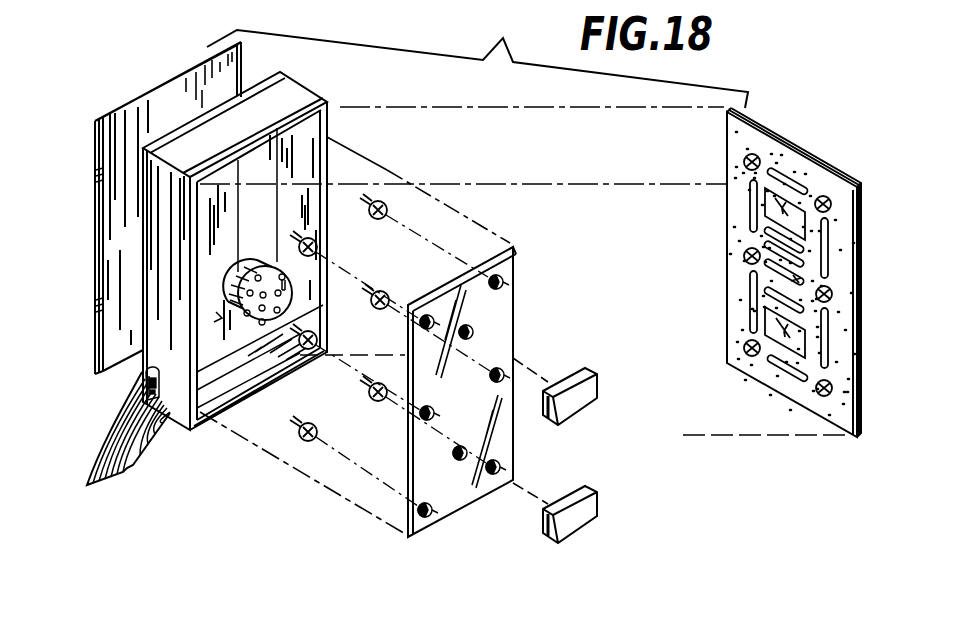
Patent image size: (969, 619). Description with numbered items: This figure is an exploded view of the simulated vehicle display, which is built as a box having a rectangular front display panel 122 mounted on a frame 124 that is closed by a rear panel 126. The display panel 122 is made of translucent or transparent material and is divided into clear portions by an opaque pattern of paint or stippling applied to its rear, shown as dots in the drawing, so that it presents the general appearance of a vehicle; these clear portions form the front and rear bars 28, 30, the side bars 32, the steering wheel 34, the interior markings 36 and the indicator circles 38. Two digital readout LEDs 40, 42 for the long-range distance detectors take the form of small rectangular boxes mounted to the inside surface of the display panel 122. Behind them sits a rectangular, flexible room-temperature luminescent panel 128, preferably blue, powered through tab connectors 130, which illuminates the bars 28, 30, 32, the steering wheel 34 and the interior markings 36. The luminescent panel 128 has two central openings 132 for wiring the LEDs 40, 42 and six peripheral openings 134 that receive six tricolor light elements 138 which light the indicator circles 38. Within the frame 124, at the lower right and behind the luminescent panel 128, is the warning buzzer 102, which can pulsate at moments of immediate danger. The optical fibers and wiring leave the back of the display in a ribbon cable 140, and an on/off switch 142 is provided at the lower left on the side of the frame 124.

The front bar 28 is at (789, 178).
The rear bar 30 is at (772, 368).
The side bars 32 is at (818, 224).
The steering wheel 34 is at (766, 308).
The interior markings 36 is at (766, 244).
The indicator circles 38 is at (744, 160).
The digital readout LED 40 is at (590, 410).
The digital readout LED 42 is at (568, 497).
The warning buzzer 102 is at (258, 322).
The front display panel 122 is at (758, 123).
The frame 124 is at (305, 94).
The rear panel 126 is at (160, 90).
The luminescent panel 128 is at (392, 517).
The tab connectors 130 is at (432, 518).
The central openings 132 is at (464, 461).
The peripheral openings 134 is at (406, 538).
The tricolor light elements 138 is at (383, 296).
The ribbon cable 140 is at (132, 480).
The on/off switch 142 is at (141, 373).